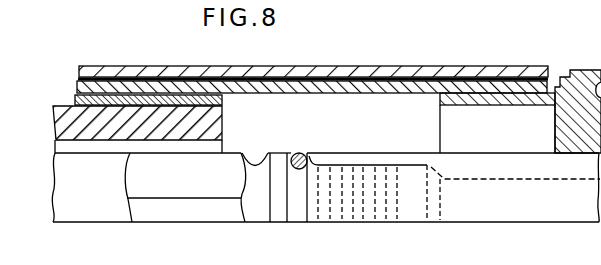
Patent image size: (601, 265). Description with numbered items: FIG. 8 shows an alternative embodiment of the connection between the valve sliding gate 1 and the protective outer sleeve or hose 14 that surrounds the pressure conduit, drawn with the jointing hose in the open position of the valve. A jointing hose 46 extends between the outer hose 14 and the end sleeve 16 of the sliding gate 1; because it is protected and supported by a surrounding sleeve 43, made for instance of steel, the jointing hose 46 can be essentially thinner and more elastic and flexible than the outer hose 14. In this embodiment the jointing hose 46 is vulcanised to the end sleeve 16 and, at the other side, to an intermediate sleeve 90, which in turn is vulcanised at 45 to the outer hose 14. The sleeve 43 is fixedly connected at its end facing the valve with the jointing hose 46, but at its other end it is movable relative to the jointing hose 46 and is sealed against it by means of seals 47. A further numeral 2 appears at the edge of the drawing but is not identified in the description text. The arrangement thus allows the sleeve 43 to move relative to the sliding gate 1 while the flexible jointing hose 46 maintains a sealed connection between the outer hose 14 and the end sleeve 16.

The sliding gate 1 is at (579, 71).
The reference numeral (partially visible) 2 is at (4, 46).
The outer hose 14 is at (54, 114).
The end sleeve 16 is at (473, 102).
The sleeve 43 is at (312, 59).
The vulcanised joint 45 is at (296, 99).
The jointing hose 46 is at (318, 88).
The seals 47 is at (93, 73).
The intermediate sleeve 90 is at (75, 98).